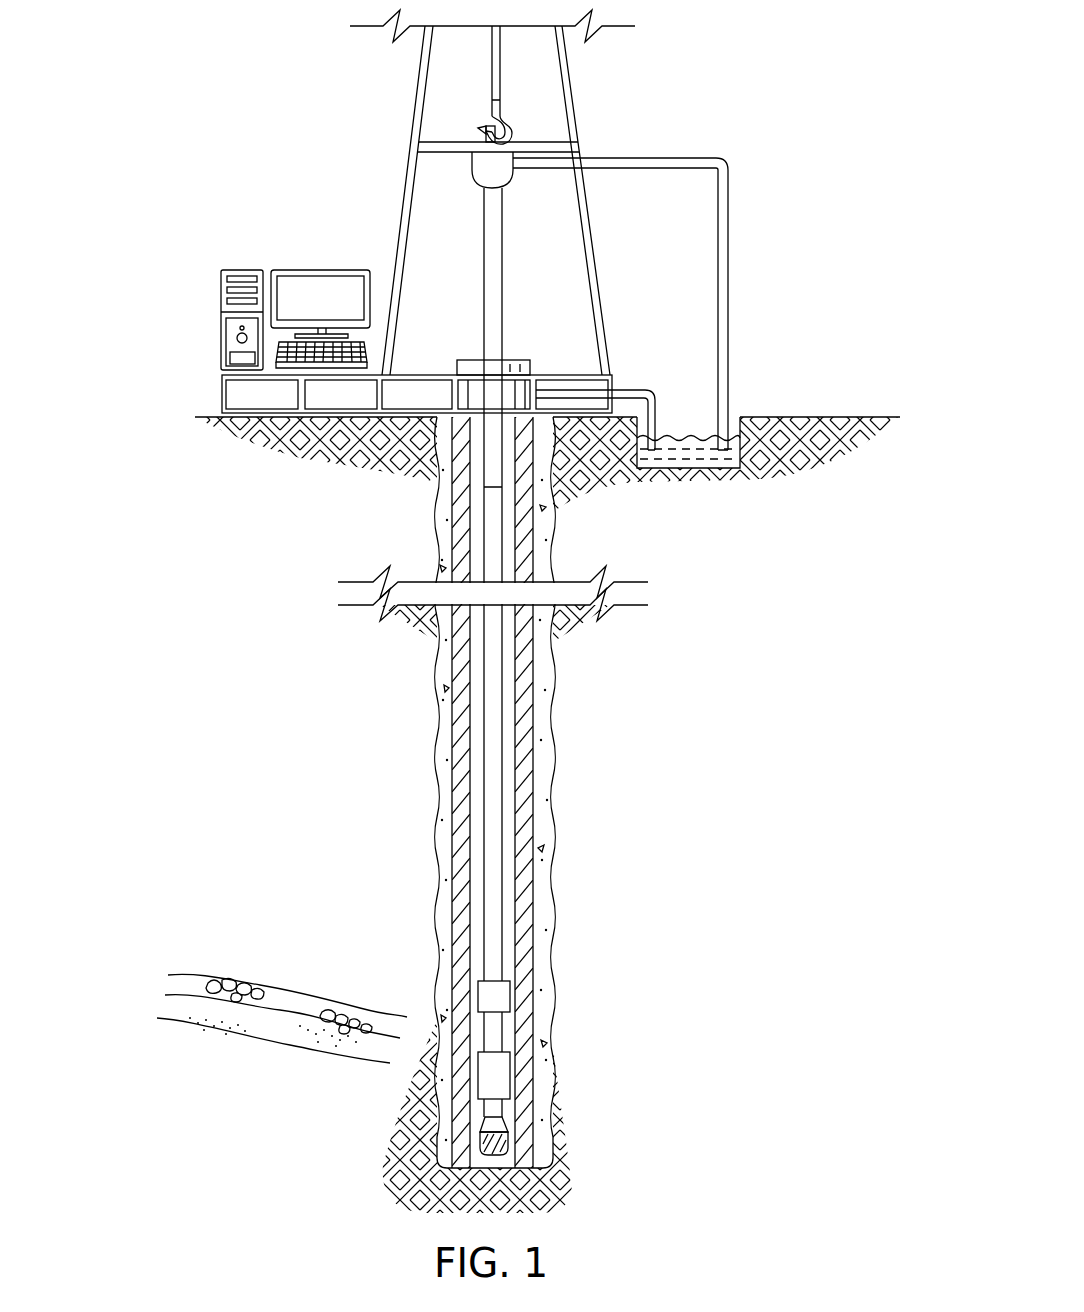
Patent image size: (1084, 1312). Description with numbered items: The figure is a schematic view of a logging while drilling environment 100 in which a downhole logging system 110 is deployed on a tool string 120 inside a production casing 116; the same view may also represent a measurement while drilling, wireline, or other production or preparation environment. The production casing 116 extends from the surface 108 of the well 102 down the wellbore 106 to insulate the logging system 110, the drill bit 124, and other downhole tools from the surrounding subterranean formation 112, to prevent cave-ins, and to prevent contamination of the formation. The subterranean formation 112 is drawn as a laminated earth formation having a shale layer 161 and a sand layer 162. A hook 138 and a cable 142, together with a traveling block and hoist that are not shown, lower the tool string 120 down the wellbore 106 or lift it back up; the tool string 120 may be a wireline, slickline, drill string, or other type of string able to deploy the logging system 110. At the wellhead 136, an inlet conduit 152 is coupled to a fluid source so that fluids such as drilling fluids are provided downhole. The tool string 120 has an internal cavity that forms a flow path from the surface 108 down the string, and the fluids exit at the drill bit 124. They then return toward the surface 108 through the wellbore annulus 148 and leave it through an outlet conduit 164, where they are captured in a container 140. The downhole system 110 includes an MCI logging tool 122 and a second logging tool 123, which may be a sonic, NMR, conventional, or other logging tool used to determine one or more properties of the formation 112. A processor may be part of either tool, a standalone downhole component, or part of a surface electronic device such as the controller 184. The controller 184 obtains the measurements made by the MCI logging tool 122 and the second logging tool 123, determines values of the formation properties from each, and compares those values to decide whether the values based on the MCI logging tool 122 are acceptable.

The LWD environment 100 is at (340, 180).
The well 102 is at (516, 356).
The wellbore 106 is at (549, 769).
The surface 108 is at (840, 417).
The logging system 110 is at (605, 1084).
The subterranean formation 112 is at (251, 1017).
The production casing 116 is at (530, 908).
The tool string 120 is at (485, 770).
The MCI logging tool 122 is at (497, 1065).
The second logging tool 123 is at (496, 996).
The drill bit 124 is at (500, 1140).
The wellhead 136 is at (465, 360).
The hook 138 is at (508, 127).
The container 140 is at (683, 470).
The cable 142 is at (487, 85).
The wellbore annulus 148 is at (478, 883).
The inlet conduit 152 is at (693, 157).
The shale layer 161 is at (290, 1000).
The sand layer 162 is at (283, 1030).
The outlet conduit 164 is at (625, 390).
The controller 184 is at (240, 268).